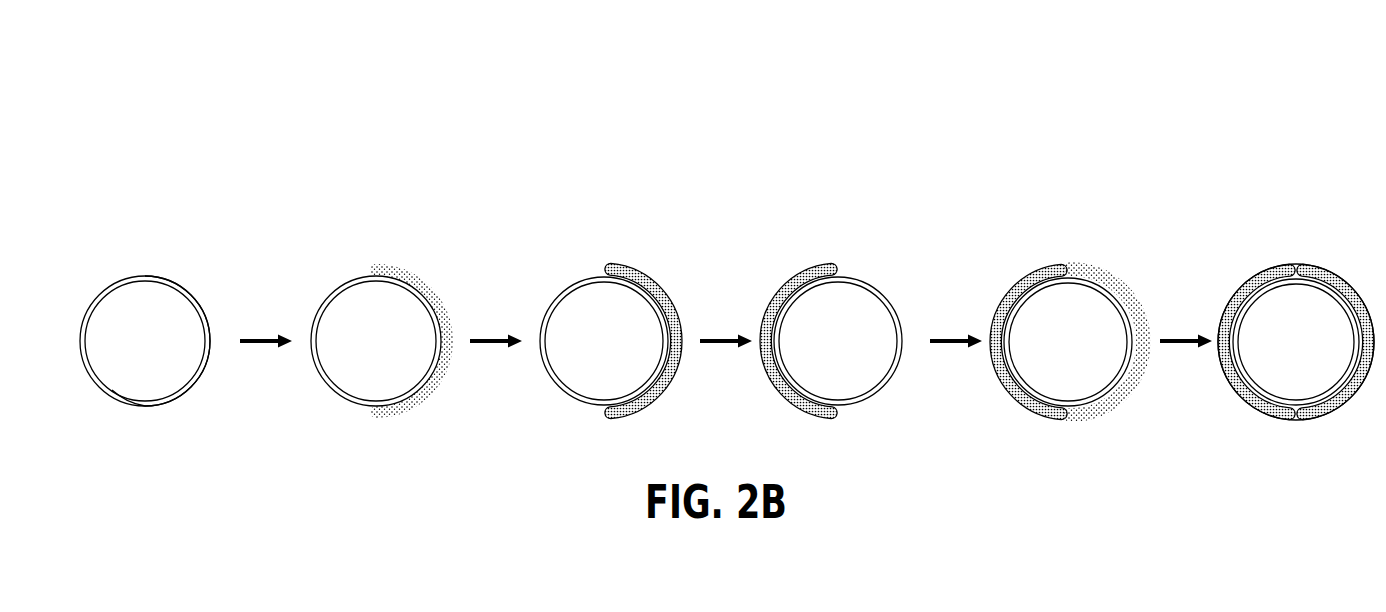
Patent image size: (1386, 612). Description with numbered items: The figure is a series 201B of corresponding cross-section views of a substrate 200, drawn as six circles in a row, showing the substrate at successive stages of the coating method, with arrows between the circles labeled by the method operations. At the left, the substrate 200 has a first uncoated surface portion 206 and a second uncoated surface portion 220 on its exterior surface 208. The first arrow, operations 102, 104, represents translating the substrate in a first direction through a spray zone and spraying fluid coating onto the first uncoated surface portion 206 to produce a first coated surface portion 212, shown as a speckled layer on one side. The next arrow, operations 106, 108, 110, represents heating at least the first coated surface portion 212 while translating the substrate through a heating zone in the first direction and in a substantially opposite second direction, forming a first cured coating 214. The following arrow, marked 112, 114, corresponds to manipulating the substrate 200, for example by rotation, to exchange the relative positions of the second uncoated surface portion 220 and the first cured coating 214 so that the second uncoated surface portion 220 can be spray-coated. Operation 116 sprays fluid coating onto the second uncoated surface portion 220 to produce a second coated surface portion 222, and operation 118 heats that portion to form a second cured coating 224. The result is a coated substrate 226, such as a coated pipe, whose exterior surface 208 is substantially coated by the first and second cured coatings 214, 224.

The substrate 200 is at (124, 355).
The series of cross-section views 201B is at (397, 130).
The first uncoated surface portion 206 is at (184, 313).
The exterior surface 208 is at (123, 402).
The first coated surface portion 212 is at (411, 319).
The first cured coating 214 is at (950, 320).
The second uncoated surface portion 220 is at (713, 313).
The second coated surface portion 222 is at (1107, 321).
The second cured coating 224 is at (1335, 320).
The coated substrate 226 is at (1223, 203).
The operation 102 is at (259, 363).
The operation 104 is at (259, 363).
The operation 106 is at (490, 377).
The operation 108 is at (490, 377).
The operation 110 is at (490, 377).
The process step 112 is at (719, 363).
The operation 114 is at (719, 363).
The operation 116 is at (956, 363).
The operation 118 is at (1186, 363).